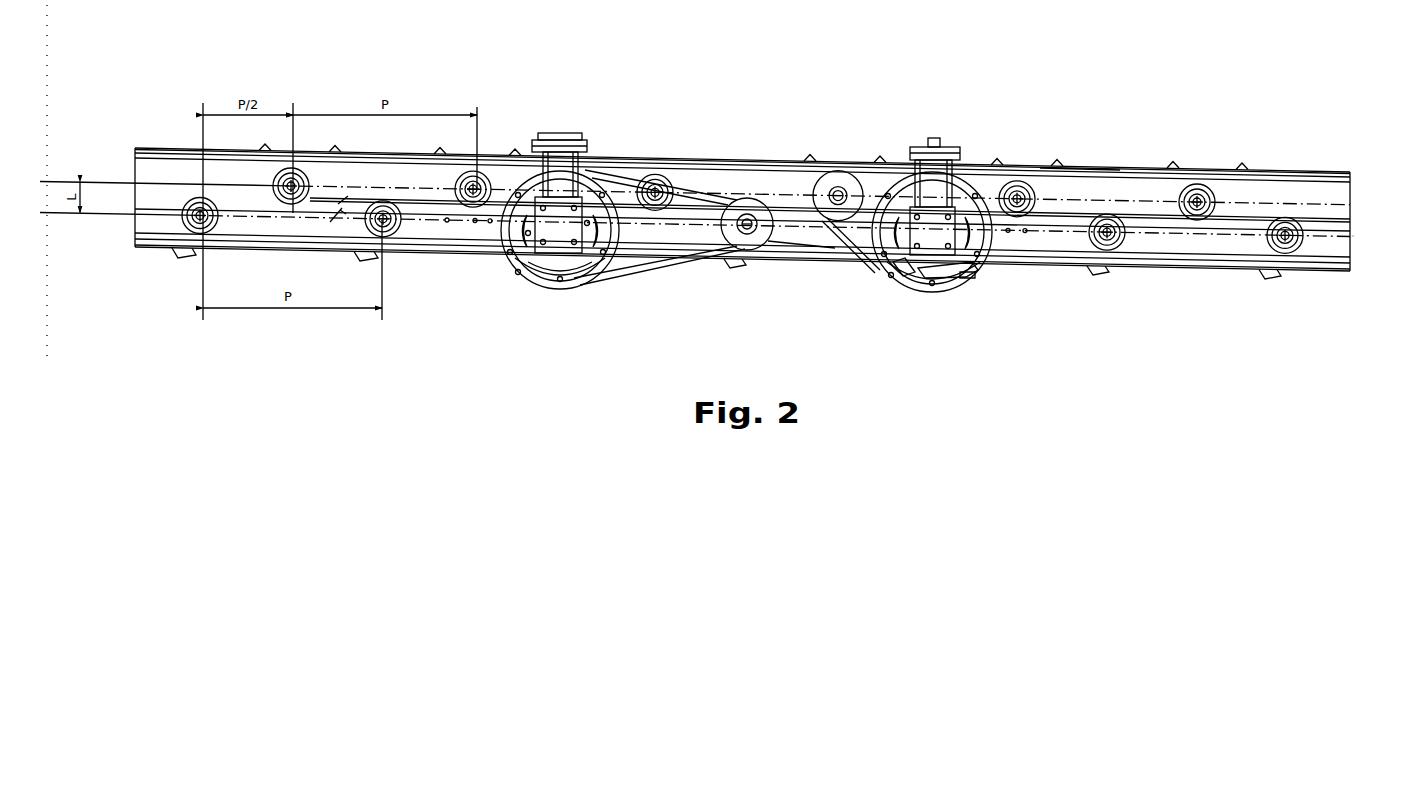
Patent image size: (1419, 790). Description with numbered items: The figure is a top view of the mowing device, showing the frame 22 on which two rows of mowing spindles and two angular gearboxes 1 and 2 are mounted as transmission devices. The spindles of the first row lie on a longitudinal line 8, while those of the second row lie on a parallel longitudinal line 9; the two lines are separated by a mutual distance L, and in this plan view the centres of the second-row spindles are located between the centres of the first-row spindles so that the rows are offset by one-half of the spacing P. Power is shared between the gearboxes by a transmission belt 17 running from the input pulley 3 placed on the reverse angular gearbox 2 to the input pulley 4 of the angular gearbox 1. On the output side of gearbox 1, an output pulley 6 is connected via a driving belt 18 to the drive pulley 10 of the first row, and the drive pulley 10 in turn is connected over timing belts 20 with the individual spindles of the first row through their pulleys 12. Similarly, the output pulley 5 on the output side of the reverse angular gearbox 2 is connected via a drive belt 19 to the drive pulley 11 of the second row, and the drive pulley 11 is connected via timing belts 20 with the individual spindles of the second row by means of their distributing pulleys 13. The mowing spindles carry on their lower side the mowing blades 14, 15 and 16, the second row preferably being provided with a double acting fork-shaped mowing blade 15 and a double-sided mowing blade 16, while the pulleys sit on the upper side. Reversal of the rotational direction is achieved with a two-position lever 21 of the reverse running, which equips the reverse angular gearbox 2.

The angular gearbox 1 is at (565, 173).
The reverse angular gearbox 2 is at (942, 140).
The input pulley of gearbox 2 3 is at (932, 186).
The input pulley of gearbox 1 4 is at (580, 130).
The output pulley of gearbox 2 5 is at (1007, 258).
The output pulley of gearbox 1 6 is at (520, 272).
The line 8 is at (447, 220).
The line 9 is at (762, 192).
The drive pulley of the first row 10 is at (757, 240).
The drive pulley of the second row 11 is at (825, 180).
The pulley 12 is at (1280, 250).
The distributing pulley 13 is at (1205, 200).
The mowing blade 14 is at (1093, 275).
The fork-shaped mowing blade 15 is at (1242, 162).
The double-sided mowing blade 16 is at (1173, 160).
The transmission belt 17 is at (697, 148).
The driving belt 18 is at (652, 268).
The drive belt 19 is at (832, 230).
The timing belt 20 is at (1153, 252).
The two-position lever 21 is at (956, 292).
The frame 22 is at (1327, 253).